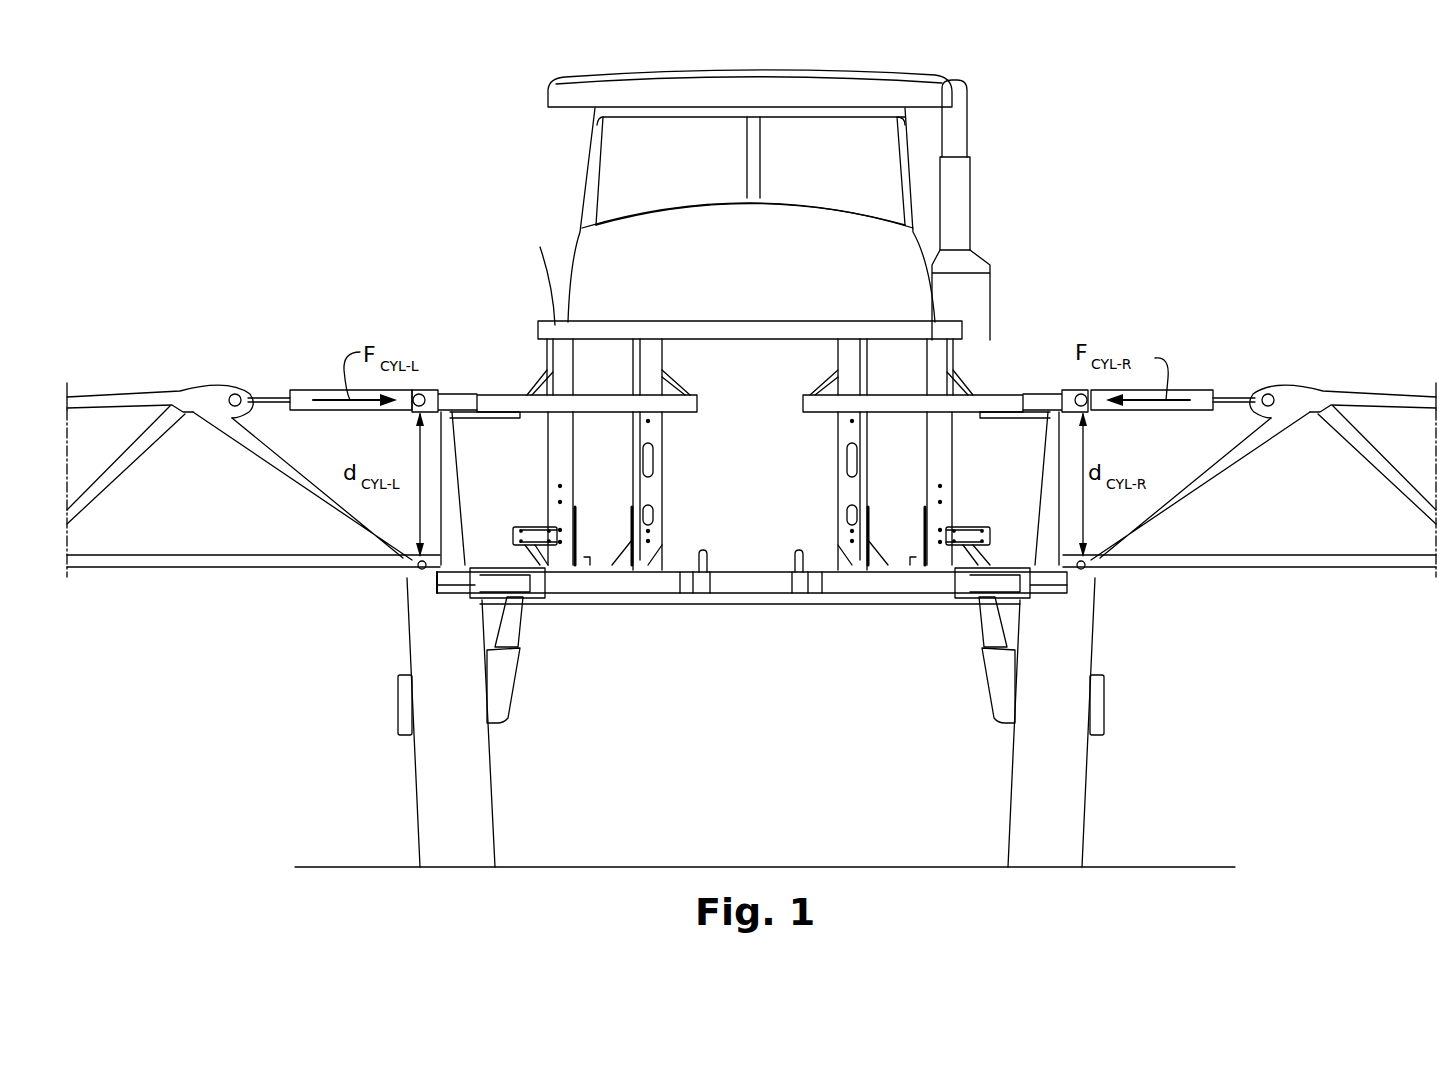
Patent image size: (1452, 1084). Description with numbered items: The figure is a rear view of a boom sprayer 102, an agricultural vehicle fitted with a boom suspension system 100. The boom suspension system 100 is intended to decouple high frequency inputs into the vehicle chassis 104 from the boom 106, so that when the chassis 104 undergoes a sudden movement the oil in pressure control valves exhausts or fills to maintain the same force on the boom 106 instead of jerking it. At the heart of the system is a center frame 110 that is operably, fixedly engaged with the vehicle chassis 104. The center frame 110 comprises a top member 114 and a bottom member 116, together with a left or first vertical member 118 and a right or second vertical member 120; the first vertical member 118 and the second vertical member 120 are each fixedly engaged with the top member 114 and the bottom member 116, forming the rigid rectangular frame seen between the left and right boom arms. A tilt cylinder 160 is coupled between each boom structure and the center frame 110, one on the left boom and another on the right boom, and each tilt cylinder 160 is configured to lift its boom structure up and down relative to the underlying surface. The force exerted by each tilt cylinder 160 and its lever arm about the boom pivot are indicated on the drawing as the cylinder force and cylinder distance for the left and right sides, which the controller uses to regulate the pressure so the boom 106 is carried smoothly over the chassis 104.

The boom suspension system 100 is at (203, 152).
The boom sprayer 102 is at (523, 135).
The chassis 104 is at (597, 604).
The boom 106 is at (146, 378).
The center frame 110 is at (1030, 366).
The top member 114 is at (555, 321).
The bottom member 116 is at (908, 578).
The first vertical member 118 is at (563, 512).
The second vertical member 120 is at (943, 512).
The tilt cylinder 160 is at (300, 390).